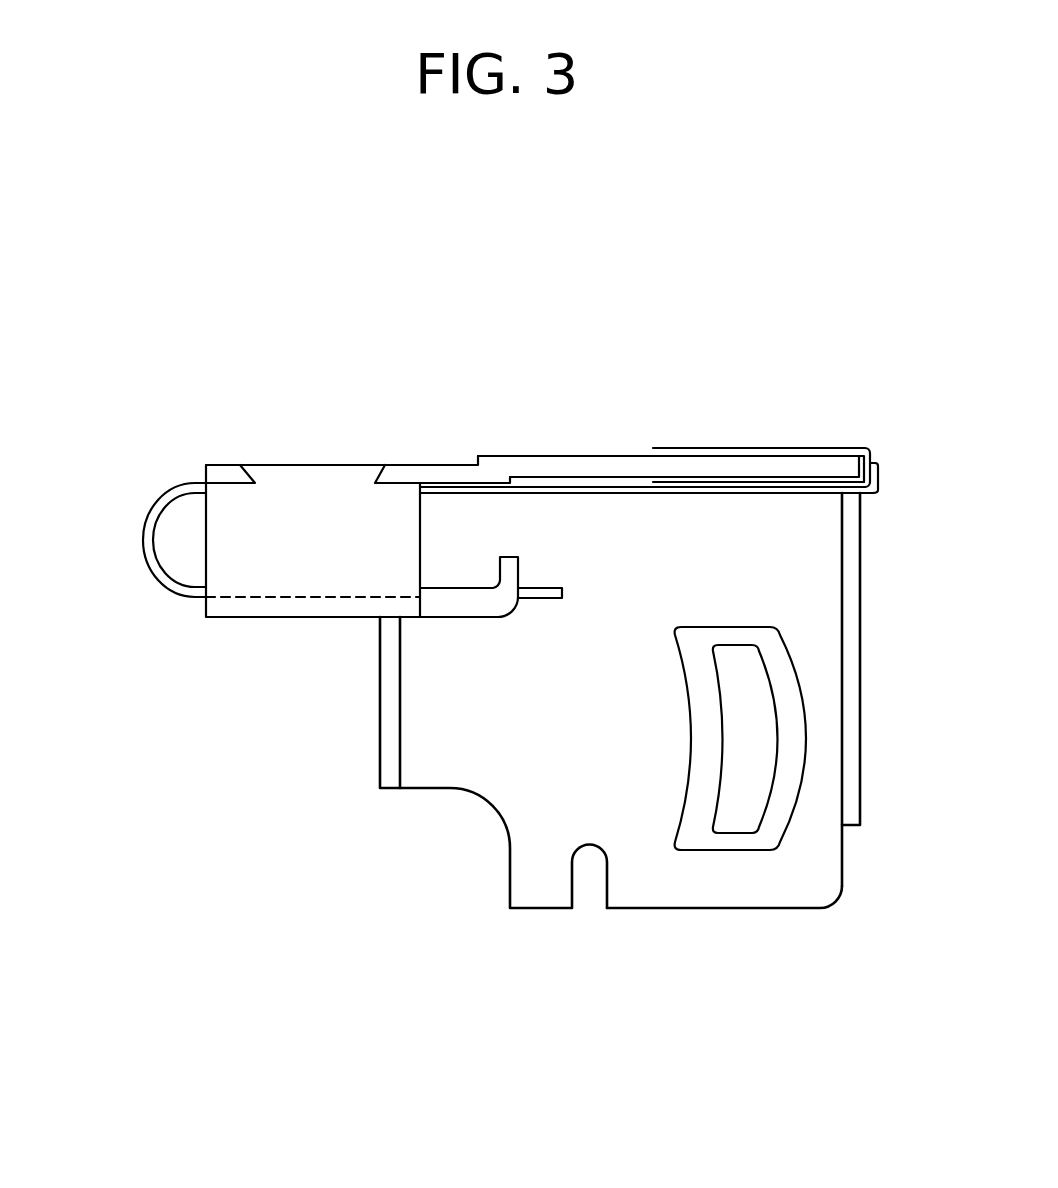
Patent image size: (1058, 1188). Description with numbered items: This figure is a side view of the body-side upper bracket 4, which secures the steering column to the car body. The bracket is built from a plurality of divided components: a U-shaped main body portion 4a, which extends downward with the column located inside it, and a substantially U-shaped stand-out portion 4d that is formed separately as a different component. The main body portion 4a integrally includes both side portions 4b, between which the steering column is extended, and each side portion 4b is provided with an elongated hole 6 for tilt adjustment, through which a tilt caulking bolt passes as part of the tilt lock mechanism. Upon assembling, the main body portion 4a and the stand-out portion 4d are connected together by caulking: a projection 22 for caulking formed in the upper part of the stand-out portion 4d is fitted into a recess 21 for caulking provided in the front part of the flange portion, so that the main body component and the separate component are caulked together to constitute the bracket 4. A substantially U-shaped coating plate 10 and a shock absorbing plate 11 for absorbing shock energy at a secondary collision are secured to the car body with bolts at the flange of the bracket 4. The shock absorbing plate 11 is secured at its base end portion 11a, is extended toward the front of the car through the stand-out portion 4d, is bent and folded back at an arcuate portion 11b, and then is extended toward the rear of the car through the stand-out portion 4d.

The body-side upper bracket 4 is at (620, 742).
The main body portion 4a is at (673, 892).
The side portion 4b is at (541, 470).
The stand-out portion 4d is at (300, 620).
The elongated hole for tilt adjustment 6 is at (768, 724).
The coating plate 10 is at (769, 448).
The shock absorbing plate 11 is at (622, 504).
The base end portion 11a is at (812, 495).
The arcuate portion 11b is at (141, 542).
The recess for caulking 21 is at (376, 468).
The projection for caulking 22 is at (302, 472).